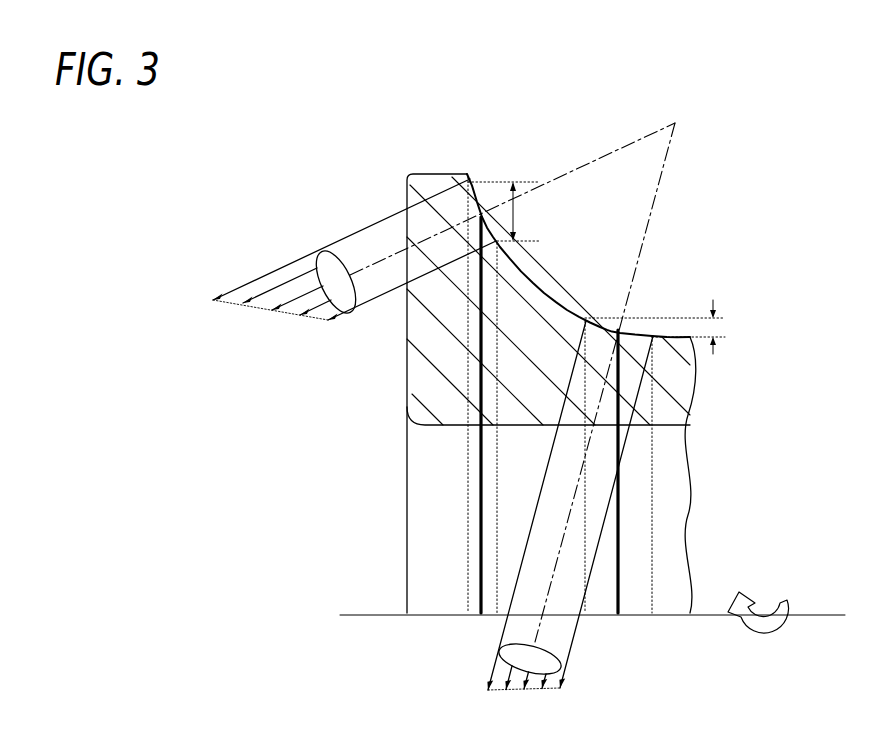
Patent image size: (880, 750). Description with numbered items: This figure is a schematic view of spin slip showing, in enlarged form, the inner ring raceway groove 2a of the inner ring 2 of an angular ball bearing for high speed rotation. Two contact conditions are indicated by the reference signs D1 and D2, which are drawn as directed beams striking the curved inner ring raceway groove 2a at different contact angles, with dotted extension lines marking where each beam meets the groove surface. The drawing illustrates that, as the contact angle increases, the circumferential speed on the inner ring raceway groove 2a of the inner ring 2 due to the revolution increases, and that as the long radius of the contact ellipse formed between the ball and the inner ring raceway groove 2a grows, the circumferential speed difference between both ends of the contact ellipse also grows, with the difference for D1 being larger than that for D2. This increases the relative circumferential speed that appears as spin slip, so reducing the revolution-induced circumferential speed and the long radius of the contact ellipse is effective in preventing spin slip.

The inner ring 2 is at (433, 374).
The inner ring raceway groove 2a is at (533, 286).
The reference sign D1 is at (444, 221).
The reference sign D2 is at (581, 408).